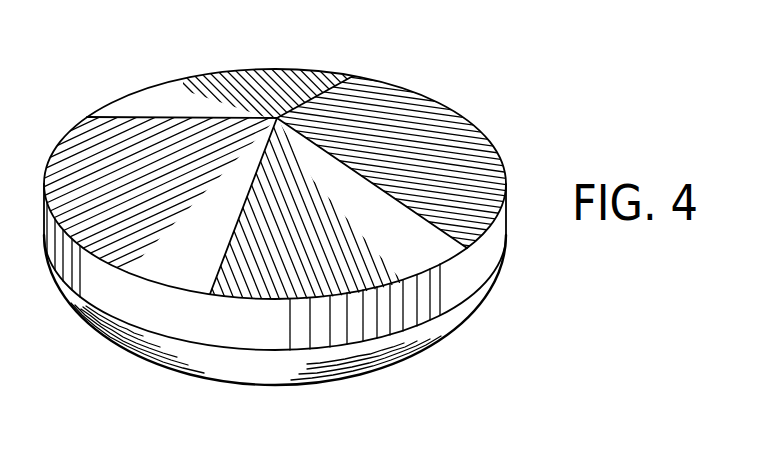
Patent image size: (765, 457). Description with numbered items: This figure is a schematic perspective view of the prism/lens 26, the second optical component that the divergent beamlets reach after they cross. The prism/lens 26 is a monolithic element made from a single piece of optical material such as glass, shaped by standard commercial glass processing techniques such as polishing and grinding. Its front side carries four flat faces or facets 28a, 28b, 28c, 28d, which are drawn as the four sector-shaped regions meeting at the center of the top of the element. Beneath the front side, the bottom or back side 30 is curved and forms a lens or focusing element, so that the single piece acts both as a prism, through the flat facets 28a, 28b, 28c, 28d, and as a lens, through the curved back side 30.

The prism/lens 26 is at (297, 70).
The flat face 28a is at (150, 95).
The flat face 28b is at (413, 248).
The flat face 28c is at (378, 85).
The flat face 28d is at (175, 270).
The bottom or back side 30 is at (347, 376).